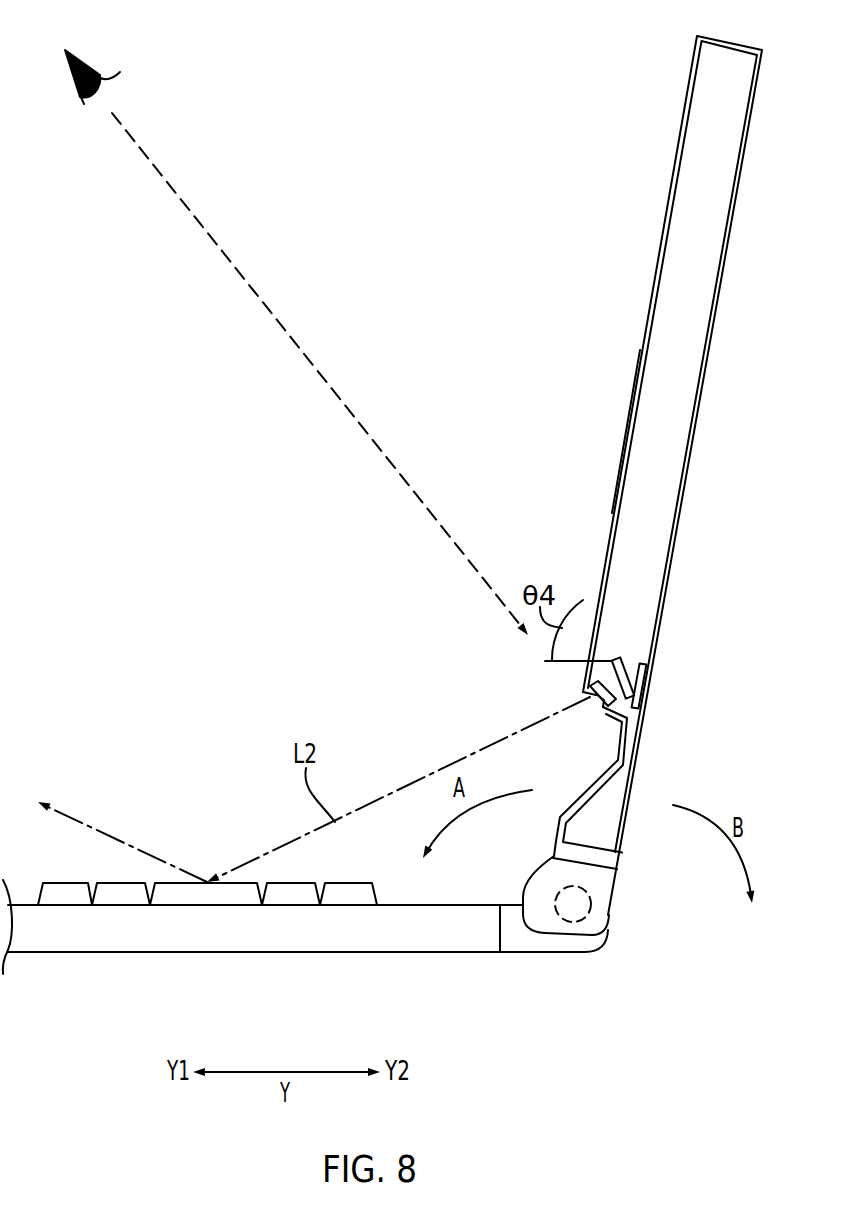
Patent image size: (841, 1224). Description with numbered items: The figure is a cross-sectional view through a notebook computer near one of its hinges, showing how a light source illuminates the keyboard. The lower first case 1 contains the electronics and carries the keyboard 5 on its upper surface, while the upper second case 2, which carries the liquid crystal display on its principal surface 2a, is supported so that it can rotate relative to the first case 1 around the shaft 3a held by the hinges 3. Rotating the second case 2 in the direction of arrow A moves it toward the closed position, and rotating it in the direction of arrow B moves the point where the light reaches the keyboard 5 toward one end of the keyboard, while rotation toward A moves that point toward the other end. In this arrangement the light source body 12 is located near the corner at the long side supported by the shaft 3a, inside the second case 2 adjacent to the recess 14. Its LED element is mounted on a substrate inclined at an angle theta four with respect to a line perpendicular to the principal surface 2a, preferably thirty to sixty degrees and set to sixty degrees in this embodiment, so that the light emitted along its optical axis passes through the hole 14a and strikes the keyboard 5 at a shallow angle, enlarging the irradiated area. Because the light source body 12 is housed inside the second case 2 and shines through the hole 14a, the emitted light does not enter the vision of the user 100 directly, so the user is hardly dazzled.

The first case 1 is at (297, 940).
The second case 2 is at (685, 417).
The principal surface 2a is at (600, 514).
The hinge 3 is at (598, 920).
The shaft 3a is at (590, 899).
The keyboard 5 is at (177, 898).
The light source body 12 is at (628, 658).
The recess 14 is at (618, 753).
The hole 14a is at (610, 708).
The user's eye 100 is at (89, 60).